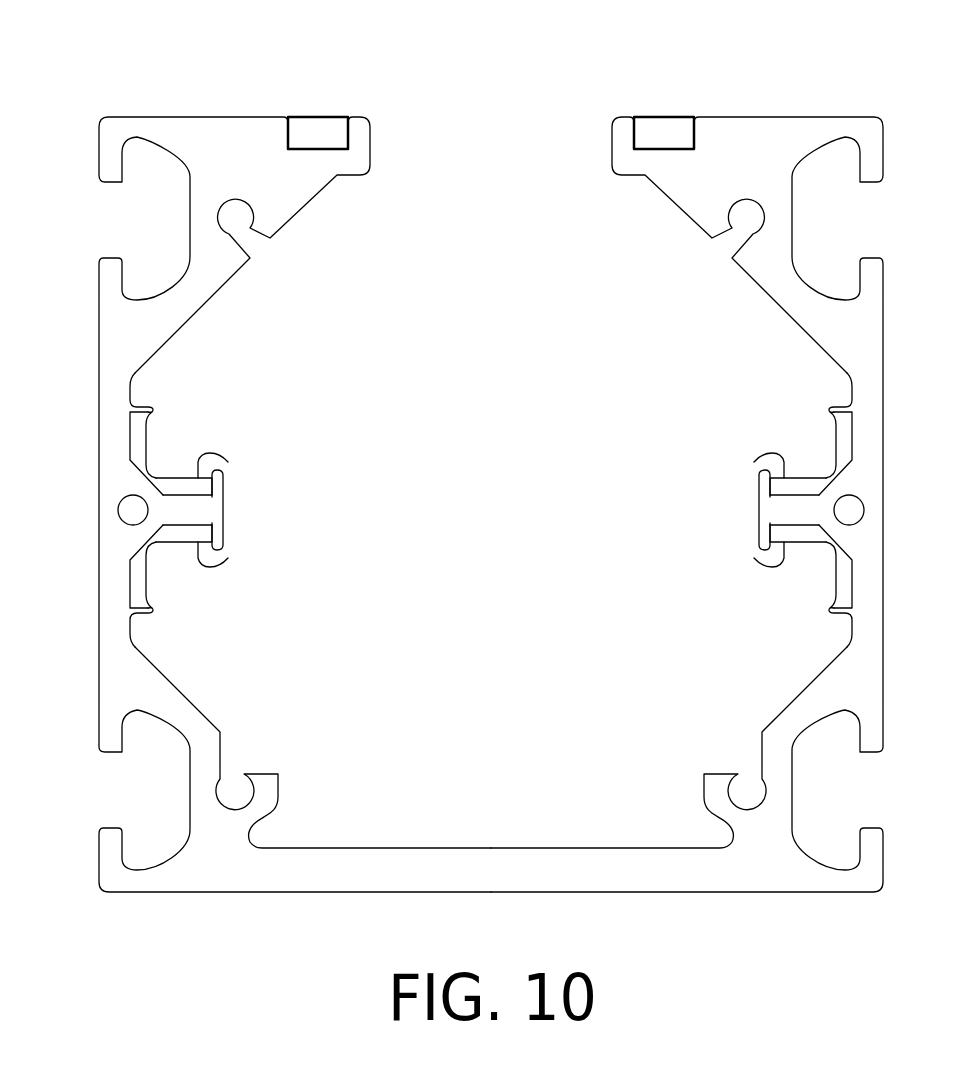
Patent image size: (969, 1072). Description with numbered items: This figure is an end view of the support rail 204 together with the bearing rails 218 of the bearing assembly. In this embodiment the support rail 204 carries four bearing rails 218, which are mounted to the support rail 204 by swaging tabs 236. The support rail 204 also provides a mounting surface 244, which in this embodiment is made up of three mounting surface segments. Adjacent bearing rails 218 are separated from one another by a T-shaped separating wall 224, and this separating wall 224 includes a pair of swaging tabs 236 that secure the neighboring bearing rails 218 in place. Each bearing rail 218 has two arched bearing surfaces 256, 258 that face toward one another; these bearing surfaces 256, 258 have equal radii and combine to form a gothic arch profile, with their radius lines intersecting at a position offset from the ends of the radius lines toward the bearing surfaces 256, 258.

The support rail 204 is at (459, 458).
The bearing rail 218 is at (131, 432).
The T-shaped separating wall 224 is at (188, 515).
The swaging tab 236 is at (134, 378).
The mounting surface 244 is at (157, 476).
The bearing surface 256 is at (153, 427).
The bearing surface 258 is at (228, 462).